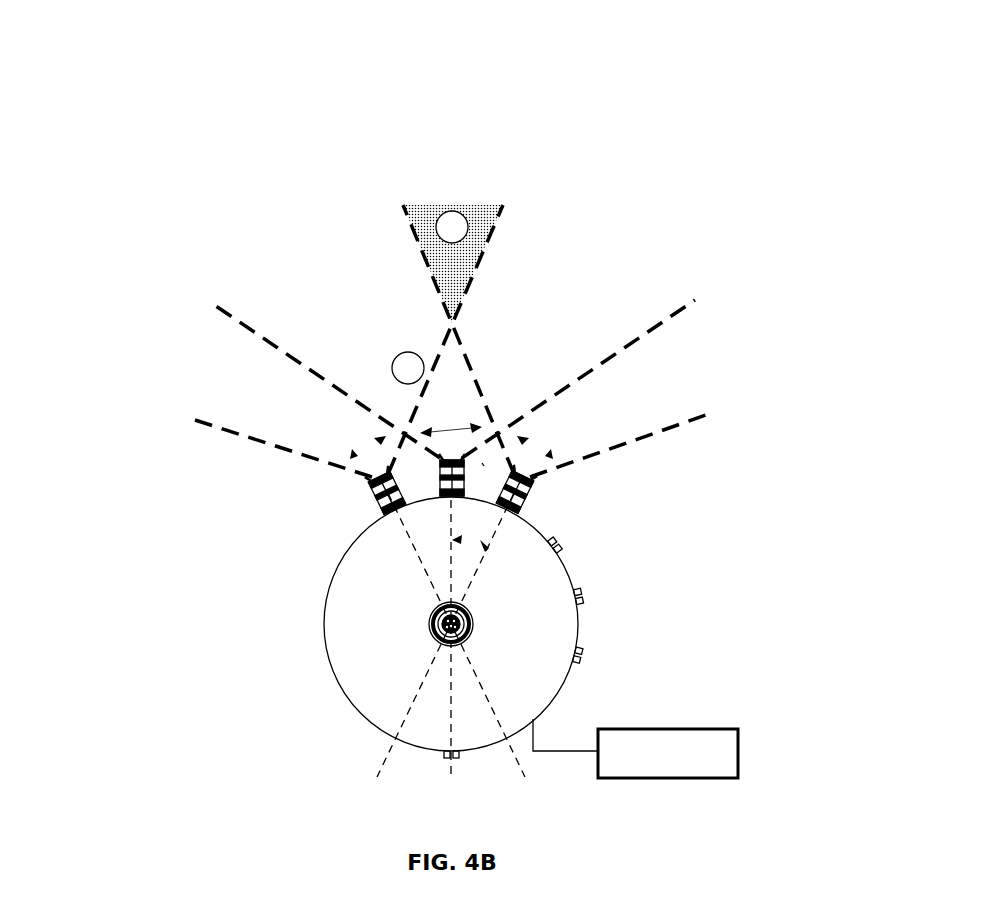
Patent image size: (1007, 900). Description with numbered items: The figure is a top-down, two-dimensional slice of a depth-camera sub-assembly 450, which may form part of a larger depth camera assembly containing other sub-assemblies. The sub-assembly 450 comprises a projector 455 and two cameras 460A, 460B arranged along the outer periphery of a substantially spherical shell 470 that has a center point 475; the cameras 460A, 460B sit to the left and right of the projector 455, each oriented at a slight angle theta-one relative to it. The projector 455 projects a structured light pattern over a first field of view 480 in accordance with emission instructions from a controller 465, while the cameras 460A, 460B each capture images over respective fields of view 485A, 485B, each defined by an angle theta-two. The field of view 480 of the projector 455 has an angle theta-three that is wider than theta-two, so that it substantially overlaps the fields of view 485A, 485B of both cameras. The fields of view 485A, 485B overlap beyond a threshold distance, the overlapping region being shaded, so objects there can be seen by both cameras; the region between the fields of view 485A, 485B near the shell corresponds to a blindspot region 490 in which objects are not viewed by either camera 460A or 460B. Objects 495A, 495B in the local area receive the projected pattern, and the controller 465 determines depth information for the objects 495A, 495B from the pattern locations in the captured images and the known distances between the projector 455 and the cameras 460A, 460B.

The depth-camera sub-assembly 450 is at (148, 36).
The projector 455 is at (440, 492).
The camera 460A is at (370, 485).
The camera 460B is at (513, 480).
The controller 465 is at (635, 748).
The spherical shell 470 is at (333, 675).
The center point 475 is at (447, 623).
The field of view 480 is at (478, 410).
The field of view 485A is at (348, 437).
The field of view 485B is at (552, 440).
The blindspot region 490 is at (482, 463).
The object 495A is at (402, 353).
The object 495B is at (453, 211).